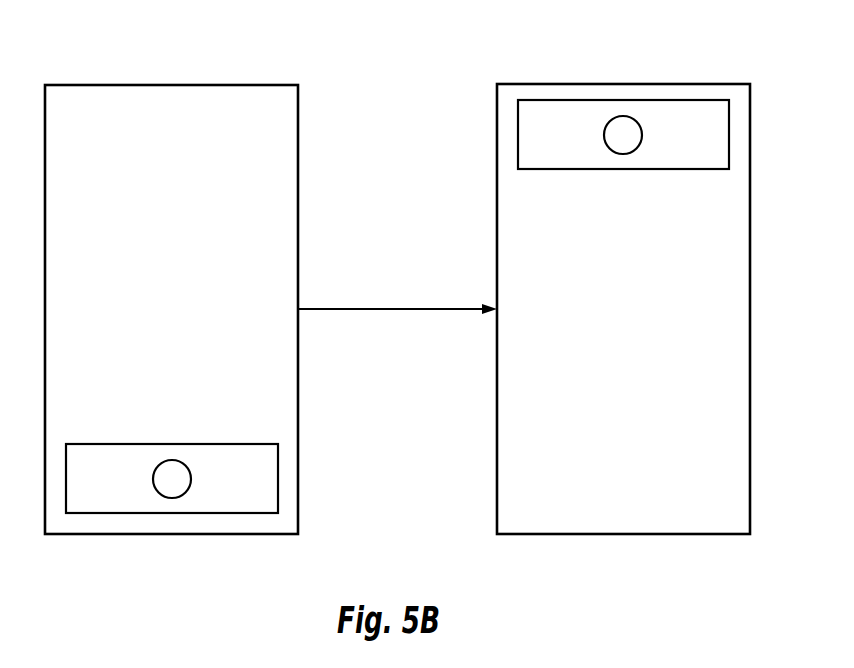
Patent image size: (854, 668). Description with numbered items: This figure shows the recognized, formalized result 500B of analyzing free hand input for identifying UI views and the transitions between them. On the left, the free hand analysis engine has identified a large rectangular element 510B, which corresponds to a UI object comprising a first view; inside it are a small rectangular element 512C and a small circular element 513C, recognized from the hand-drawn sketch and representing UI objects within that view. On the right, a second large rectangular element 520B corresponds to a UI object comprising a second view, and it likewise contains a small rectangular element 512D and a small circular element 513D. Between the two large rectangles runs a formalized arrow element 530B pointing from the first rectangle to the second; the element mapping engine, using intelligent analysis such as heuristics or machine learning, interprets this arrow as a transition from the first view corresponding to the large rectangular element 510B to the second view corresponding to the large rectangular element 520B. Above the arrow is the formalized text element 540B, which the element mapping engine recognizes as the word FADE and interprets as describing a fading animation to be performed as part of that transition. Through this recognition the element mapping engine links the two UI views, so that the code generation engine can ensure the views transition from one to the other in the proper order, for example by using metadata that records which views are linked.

The recognized free hand input 500B is at (413, 36).
The large rectangular element 510B is at (216, 84).
The small rectangular element 512C is at (198, 444).
The small circular element 513C is at (191, 472).
The large rectangular element 520B is at (670, 84).
The small rectangular element 512D is at (634, 169).
The small circular element 513D is at (642, 135).
The formalized arrow element 530B is at (380, 309).
The FADE text element 540B is at (415, 250).